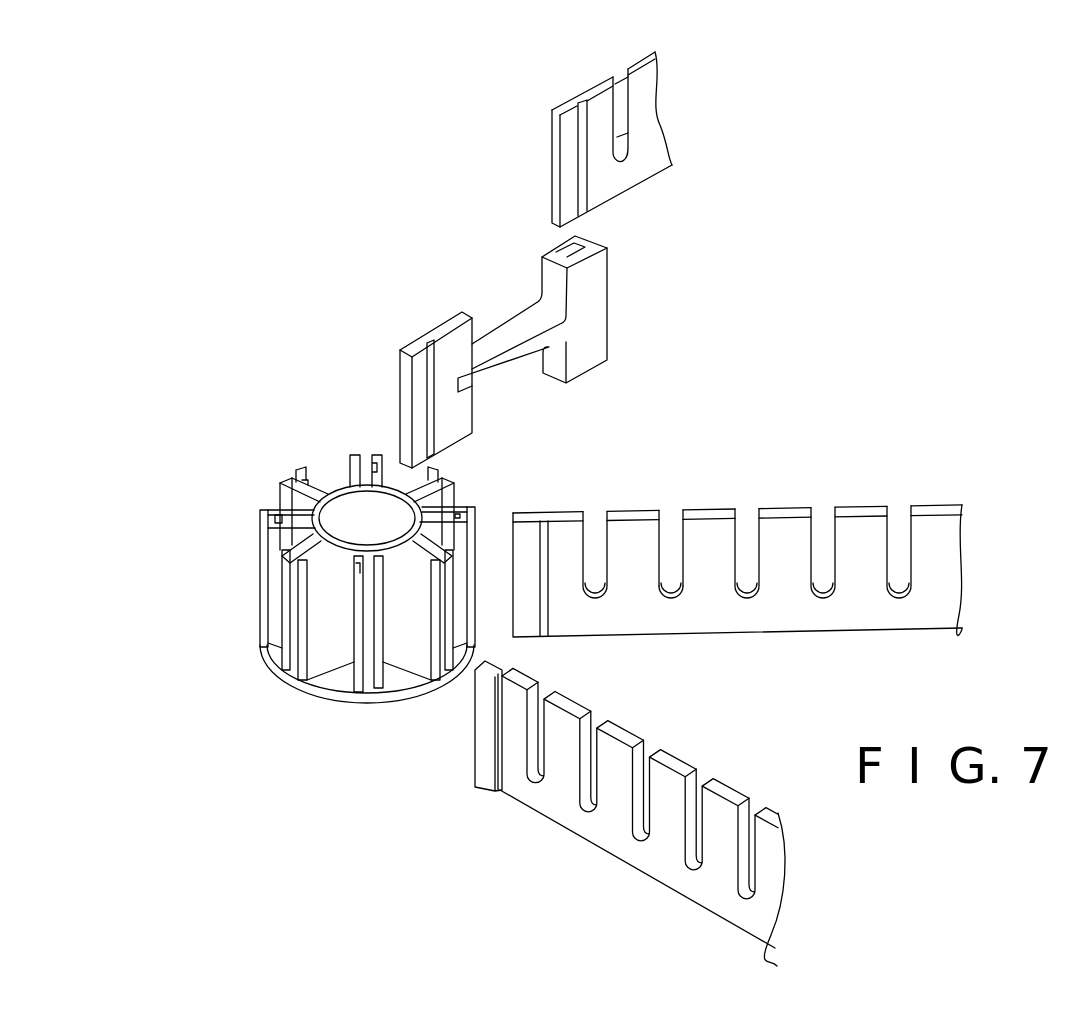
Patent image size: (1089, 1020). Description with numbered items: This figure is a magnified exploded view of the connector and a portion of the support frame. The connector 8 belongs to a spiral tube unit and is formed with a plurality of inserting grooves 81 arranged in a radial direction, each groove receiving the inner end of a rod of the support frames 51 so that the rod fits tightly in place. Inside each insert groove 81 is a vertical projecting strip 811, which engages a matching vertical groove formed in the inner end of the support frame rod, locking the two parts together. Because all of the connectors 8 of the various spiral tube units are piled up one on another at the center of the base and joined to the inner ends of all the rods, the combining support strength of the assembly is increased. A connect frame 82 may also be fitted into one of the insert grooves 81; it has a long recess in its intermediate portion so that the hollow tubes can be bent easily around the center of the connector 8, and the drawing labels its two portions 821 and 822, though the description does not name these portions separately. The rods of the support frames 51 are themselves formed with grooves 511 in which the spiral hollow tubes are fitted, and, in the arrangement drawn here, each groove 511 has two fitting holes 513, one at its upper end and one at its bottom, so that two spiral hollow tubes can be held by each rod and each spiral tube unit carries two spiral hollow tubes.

The connector 8 is at (272, 458).
The inserting groove 81 is at (462, 488).
The vertical projecting strip 811 is at (472, 508).
The connect frame 82 is at (383, 203).
The hook post of clip 821 is at (567, 247).
The plate of clip 822 is at (522, 310).
The support frame 51 is at (652, 202).
The groove 511 is at (678, 535).
The fitting hole 513 is at (682, 530).